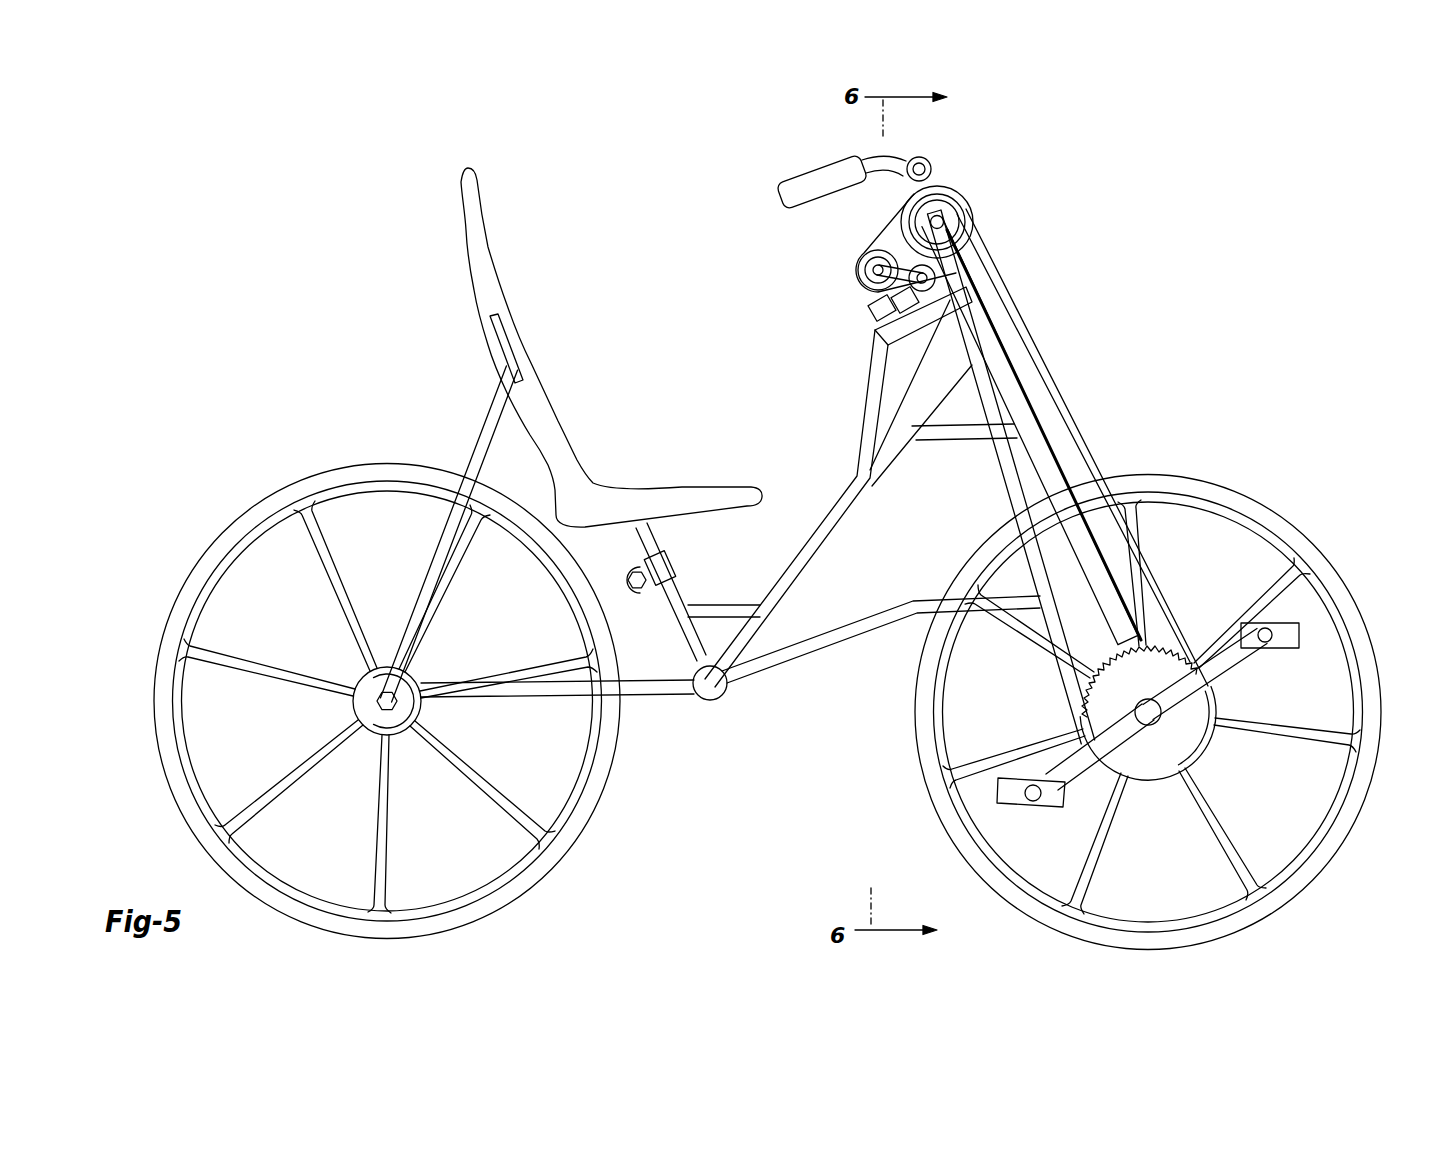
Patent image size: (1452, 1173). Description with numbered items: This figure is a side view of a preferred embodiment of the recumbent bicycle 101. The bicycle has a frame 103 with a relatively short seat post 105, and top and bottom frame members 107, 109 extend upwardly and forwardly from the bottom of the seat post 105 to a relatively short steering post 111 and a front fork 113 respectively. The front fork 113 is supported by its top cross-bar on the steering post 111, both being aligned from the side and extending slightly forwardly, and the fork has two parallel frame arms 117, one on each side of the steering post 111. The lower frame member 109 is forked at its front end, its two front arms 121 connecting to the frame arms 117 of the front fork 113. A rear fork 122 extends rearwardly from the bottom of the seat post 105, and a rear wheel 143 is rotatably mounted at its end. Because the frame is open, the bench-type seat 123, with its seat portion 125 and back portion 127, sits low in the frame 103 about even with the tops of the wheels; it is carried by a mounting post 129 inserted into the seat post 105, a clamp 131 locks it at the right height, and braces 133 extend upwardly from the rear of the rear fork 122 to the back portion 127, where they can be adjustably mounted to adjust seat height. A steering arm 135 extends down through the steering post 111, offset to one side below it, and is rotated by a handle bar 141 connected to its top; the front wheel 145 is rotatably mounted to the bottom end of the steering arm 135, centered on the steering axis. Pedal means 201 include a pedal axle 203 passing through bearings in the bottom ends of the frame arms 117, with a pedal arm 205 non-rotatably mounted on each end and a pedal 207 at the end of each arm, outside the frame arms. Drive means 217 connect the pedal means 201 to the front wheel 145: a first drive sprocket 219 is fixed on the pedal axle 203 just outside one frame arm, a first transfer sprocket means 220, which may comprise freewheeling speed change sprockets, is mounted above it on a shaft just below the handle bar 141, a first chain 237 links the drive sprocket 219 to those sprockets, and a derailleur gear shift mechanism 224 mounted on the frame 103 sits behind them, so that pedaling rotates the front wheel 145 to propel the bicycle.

The recumbent bicycle 101 is at (620, 228).
The frame 103 is at (745, 692).
The seat post 105 is at (730, 561).
The top frame member 107 is at (850, 490).
The bottom frame member 109 is at (806, 660).
The steering post 111 is at (987, 312).
The front fork 113 is at (1037, 404).
The frame arm 117 is at (981, 322).
The front arms of the lower frame member 121 is at (1040, 615).
The rear fork 122 is at (550, 700).
The seat 123 is at (534, 347).
The seat portion 125 is at (689, 485).
The back portion 127 is at (463, 240).
The mounting post 129 is at (657, 537).
The clamp 131 is at (680, 570).
The braces 133 is at (474, 458).
The steering arm 135 is at (1032, 372).
The handle bar 141 is at (783, 190).
The rear wheel 143 is at (583, 840).
The front wheel 145 is at (1360, 829).
The pedal means 201 is at (981, 809).
The pedal axle 203 is at (1152, 712).
The pedal arm 205 is at (1058, 771).
The pedal 207 is at (997, 792).
The drive means 217 is at (1115, 463).
The first drive sprocket 219 is at (1163, 642).
The first transfer sprocket means 220 is at (964, 228).
The derailleur gear shift mechanism 224 is at (843, 271).
The first chain 237 is at (1083, 432).